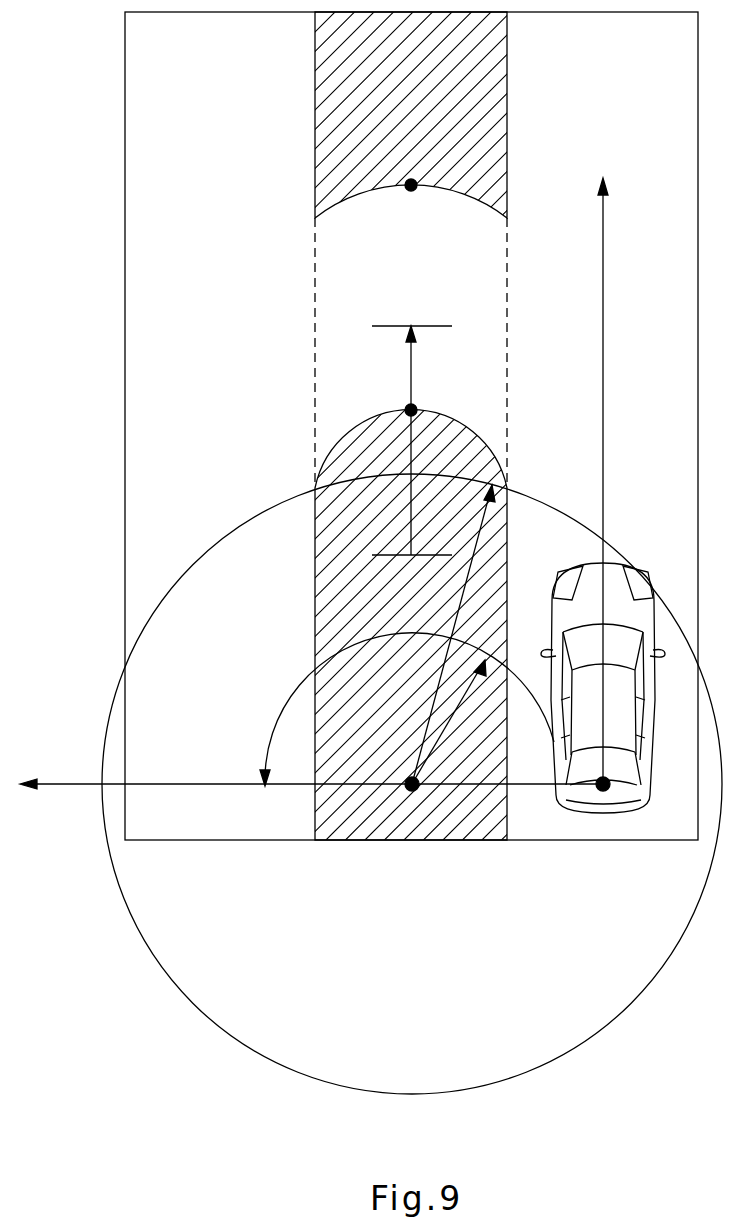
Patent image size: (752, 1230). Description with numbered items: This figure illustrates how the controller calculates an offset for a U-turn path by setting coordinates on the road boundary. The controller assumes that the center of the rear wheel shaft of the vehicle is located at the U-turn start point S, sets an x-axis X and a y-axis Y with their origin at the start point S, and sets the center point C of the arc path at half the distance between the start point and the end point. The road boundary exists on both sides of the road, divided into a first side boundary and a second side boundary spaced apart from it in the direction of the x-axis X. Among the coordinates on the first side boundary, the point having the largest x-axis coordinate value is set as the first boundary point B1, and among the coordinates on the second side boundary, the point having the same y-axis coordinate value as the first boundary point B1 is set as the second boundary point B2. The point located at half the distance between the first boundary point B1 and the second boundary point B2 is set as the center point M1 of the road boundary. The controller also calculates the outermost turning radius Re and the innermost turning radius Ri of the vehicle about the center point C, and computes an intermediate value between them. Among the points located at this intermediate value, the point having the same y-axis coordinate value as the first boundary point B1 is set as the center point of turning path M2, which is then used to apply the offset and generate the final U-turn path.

The first boundary point B1 is at (428, 399).
The second boundary point B2 is at (413, 201).
The center point of the road boundary M1 is at (396, 360).
The center point of turning path M2 is at (396, 490).
The outermost turning radius Re is at (455, 598).
The innermost turning radius Ri is at (458, 722).
The center point of the arc path C is at (413, 799).
The start point S is at (603, 790).
The x-axis X is at (616, 481).
The y-axis Y is at (311, 772).